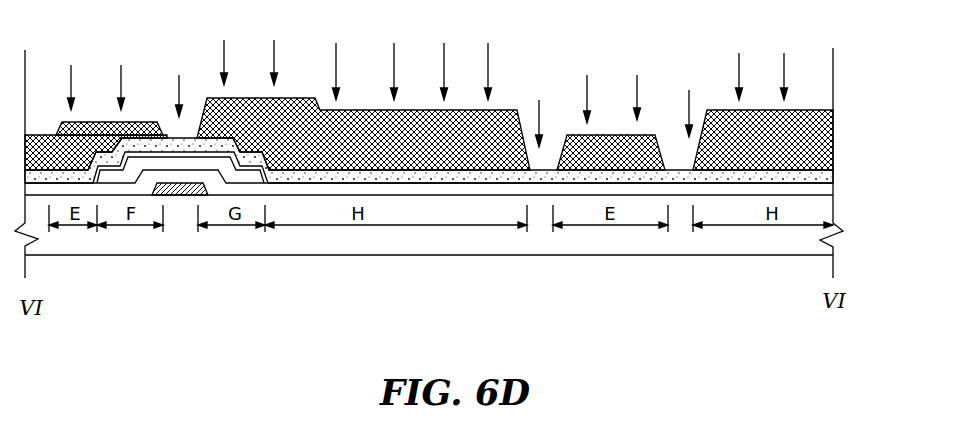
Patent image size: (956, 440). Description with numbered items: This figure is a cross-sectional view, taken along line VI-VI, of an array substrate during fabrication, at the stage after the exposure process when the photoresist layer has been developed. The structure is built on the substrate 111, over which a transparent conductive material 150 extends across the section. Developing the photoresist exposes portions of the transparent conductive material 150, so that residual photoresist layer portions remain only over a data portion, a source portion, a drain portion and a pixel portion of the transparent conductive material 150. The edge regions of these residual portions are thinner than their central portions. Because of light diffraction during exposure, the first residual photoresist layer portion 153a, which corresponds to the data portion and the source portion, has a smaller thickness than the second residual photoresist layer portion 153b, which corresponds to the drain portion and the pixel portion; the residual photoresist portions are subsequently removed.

The substrate 111 is at (452, 248).
The transparent conductive material 150 is at (815, 174).
The first residual photoresist layer portion 153a is at (138, 122).
The second residual photoresist layer portion 153b is at (613, 30).